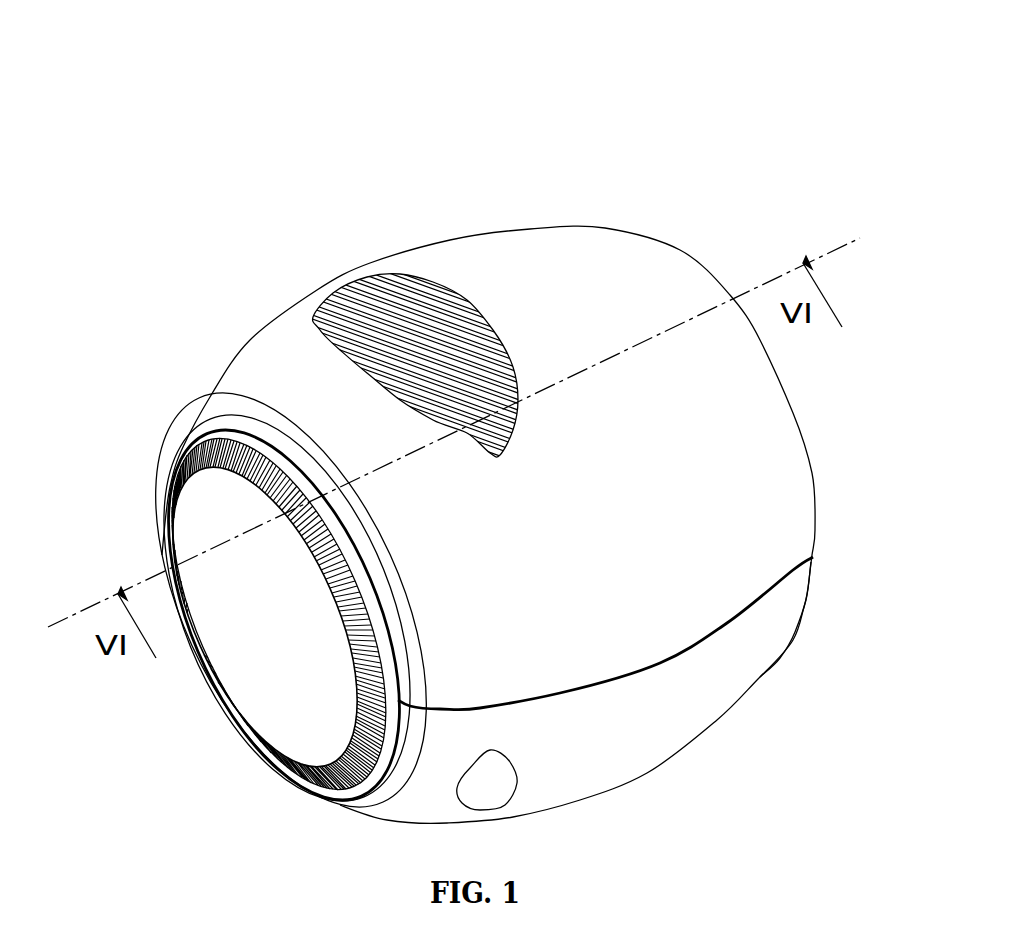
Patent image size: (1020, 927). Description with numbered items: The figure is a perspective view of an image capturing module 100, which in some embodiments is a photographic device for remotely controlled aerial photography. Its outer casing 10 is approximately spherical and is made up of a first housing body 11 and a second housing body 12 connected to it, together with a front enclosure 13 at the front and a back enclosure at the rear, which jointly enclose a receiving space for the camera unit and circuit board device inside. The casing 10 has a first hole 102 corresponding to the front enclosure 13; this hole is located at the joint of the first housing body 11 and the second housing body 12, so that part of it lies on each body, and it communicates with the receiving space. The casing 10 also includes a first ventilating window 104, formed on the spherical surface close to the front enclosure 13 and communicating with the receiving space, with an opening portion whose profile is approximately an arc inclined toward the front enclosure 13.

The image capturing module 100 is at (520, 67).
The casing 10 is at (480, 508).
The first housing body 11 is at (795, 484).
The second housing body 12 is at (622, 758).
The front enclosure 13 is at (330, 800).
The first hole 102 is at (272, 600).
The first ventilating window 104 is at (347, 300).